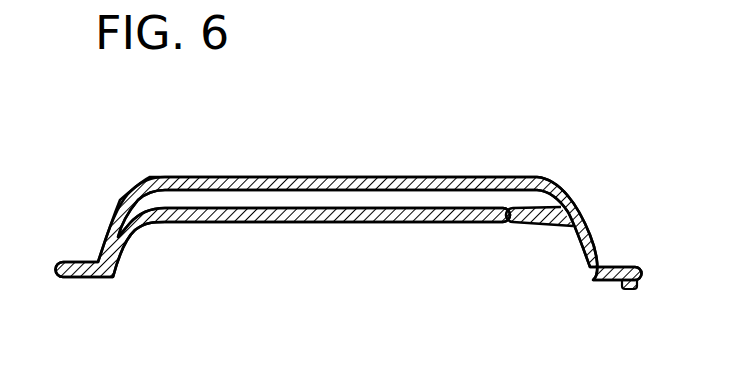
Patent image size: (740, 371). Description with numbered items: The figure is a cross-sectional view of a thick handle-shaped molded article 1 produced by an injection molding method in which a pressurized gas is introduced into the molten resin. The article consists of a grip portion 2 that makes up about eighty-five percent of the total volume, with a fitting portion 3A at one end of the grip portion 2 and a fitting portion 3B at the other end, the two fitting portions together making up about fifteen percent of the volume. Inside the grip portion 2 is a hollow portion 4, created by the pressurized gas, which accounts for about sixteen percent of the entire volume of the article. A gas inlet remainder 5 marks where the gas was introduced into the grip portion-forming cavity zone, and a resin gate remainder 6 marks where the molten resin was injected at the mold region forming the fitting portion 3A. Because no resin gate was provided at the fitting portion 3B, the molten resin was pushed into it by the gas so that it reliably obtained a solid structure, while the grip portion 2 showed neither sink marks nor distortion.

The handle-shaped molded article 1 is at (418, 122).
The grip portion 2 is at (272, 174).
The fitting portion 3A is at (637, 264).
The fitting portion 3B is at (77, 259).
The hollow portion 4 is at (258, 201).
The gas inlet remainder 5 is at (508, 228).
The resin gate remainder 6 is at (632, 291).